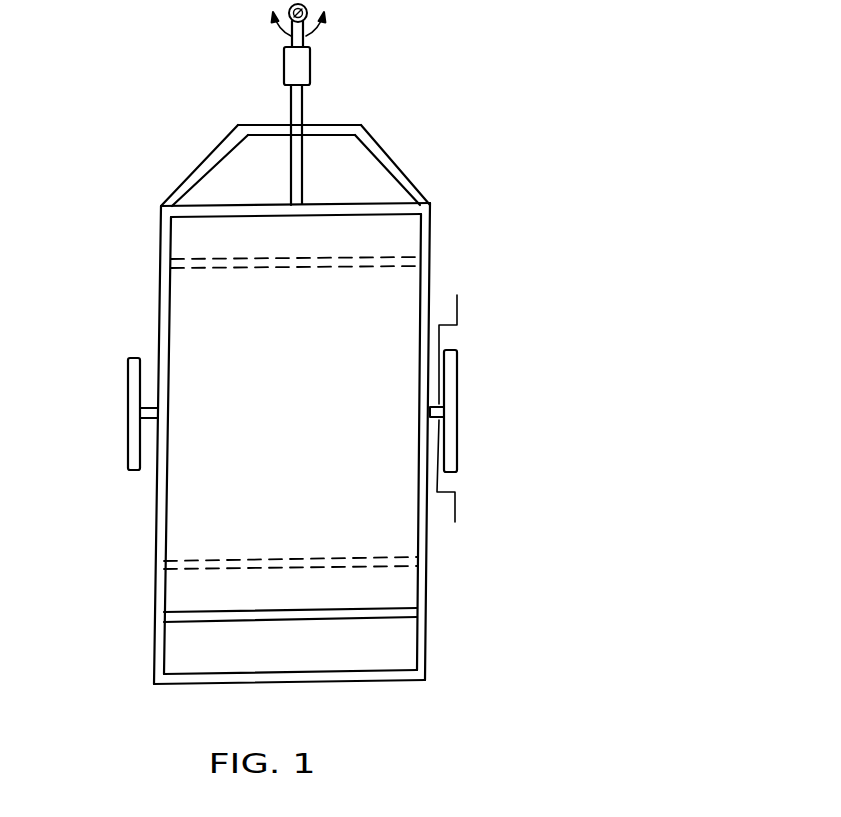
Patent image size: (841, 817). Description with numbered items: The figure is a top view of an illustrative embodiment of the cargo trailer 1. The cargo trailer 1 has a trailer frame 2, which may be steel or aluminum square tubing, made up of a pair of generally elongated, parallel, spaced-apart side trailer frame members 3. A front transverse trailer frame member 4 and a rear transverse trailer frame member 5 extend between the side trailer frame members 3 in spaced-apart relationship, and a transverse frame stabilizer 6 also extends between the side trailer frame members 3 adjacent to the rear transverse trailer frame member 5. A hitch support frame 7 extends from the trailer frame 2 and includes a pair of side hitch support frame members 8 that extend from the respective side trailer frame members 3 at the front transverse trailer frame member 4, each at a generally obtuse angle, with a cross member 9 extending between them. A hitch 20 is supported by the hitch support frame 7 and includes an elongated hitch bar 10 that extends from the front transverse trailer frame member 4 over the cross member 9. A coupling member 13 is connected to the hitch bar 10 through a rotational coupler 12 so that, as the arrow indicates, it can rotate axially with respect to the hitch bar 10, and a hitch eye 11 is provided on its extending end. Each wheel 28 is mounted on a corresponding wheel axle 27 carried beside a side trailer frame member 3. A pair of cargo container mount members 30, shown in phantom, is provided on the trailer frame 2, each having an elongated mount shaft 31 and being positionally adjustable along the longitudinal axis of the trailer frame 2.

The cargo trailer 1 is at (123, 125).
The trailer frame 2 is at (290, 468).
The side trailer frame members 3 is at (440, 308).
The front transverse trailer frame member 4 is at (272, 208).
The rear transverse trailer frame member 5 is at (385, 679).
The transverse frame stabilizer 6 is at (317, 613).
The hitch support frame 7 is at (357, 137).
The side hitch support frame members 8 is at (212, 165).
The cross member 9 is at (333, 133).
The hitch bar 10 is at (296, 107).
The hitch eye 11 is at (308, 6).
The rotational coupler 12 is at (292, 60).
The coupling member 13 is at (302, 40).
The hitch 20 is at (306, 170).
The wheel axle 27 is at (437, 408).
The wheel 28 is at (458, 394).
The cargo container mount members 30 is at (230, 275).
The mount shaft 31 is at (364, 268).